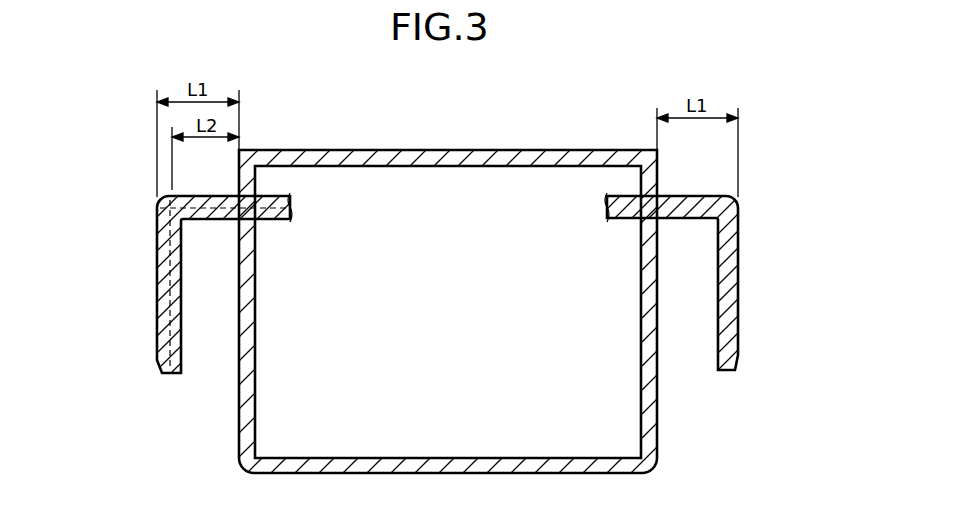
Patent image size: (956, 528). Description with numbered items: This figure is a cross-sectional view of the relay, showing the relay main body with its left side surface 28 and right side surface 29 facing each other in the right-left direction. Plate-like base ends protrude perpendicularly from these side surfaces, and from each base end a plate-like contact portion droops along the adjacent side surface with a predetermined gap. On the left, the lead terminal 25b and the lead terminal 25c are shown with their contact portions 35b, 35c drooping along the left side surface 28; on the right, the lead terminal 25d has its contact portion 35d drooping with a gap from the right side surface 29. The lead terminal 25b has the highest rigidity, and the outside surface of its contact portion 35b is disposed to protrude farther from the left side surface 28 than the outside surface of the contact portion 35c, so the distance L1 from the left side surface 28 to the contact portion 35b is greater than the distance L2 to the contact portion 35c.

The left side surface 28 is at (444, 331).
The right side surface 29 is at (657, 420).
The lead terminal 25b is at (171, 328).
The contact portion 35b is at (157, 273).
The lead terminal 25c is at (147, 382).
The contact portion 35c is at (187, 343).
The lead terminal 25d is at (715, 308).
The contact portion 35d is at (738, 305).